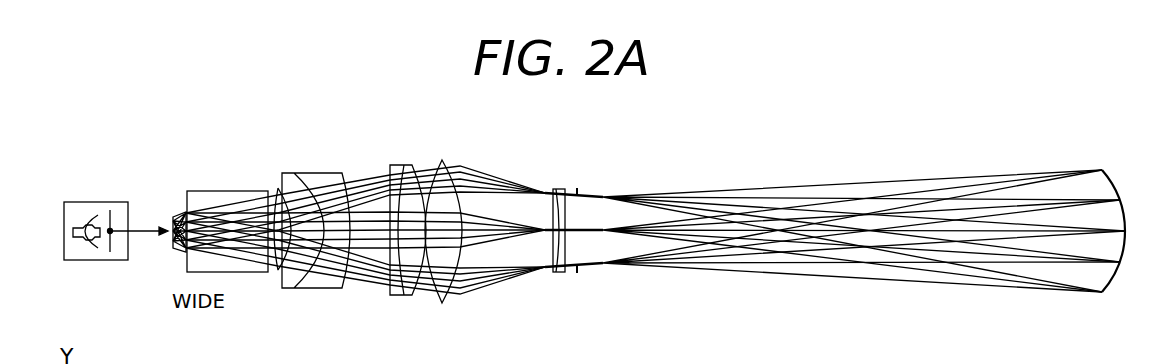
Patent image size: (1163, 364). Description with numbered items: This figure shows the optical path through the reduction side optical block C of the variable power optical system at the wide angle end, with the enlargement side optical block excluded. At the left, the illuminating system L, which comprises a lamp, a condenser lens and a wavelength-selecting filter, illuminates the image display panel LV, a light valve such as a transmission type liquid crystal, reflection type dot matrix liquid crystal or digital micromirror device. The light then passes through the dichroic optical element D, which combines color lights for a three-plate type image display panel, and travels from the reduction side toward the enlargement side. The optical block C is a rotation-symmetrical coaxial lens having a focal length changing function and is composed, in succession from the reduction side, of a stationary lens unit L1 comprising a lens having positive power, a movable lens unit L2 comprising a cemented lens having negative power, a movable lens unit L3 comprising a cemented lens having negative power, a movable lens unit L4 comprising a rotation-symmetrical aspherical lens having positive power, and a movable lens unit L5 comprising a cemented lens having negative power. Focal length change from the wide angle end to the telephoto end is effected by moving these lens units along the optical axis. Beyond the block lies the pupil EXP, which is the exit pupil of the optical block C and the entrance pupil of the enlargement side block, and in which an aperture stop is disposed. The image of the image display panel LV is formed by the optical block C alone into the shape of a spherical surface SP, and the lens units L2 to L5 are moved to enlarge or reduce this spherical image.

The illuminating system L is at (90, 202).
The image display panel (light valve) LV is at (172, 217).
The dichroic optical element D is at (222, 191).
The stationary lens unit L1 is at (282, 150).
The movable lens unit L2 is at (342, 150).
The movable lens unit L3 is at (423, 150).
The movable lens unit L4 is at (455, 150).
The movable lens unit L5 is at (567, 150).
The pupil EXP is at (583, 192).
The spherical surface SP is at (1120, 190).
The reduction side optical block C is at (270, 318).